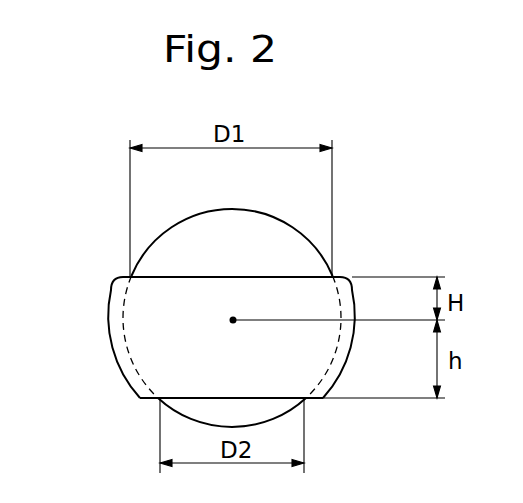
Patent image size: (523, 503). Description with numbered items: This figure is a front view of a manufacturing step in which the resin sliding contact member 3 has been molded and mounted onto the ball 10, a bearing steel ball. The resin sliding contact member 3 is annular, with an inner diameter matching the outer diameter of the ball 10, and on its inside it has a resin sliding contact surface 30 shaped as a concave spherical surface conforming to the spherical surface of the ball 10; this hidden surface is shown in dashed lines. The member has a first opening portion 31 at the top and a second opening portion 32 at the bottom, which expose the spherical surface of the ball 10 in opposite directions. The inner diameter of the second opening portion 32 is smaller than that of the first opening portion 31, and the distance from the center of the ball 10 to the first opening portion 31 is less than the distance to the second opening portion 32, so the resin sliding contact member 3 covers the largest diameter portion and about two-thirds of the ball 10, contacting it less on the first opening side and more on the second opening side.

The resin sliding contact member 3 is at (120, 368).
The ball 10 is at (188, 237).
The resin sliding contact surface 30 is at (127, 342).
The first opening portion 31 is at (273, 277).
The second opening portion 32 is at (267, 399).